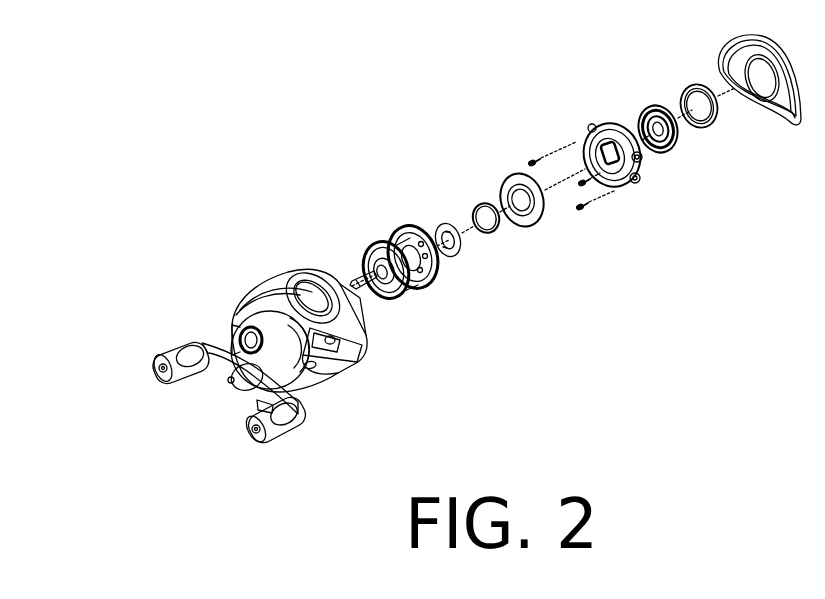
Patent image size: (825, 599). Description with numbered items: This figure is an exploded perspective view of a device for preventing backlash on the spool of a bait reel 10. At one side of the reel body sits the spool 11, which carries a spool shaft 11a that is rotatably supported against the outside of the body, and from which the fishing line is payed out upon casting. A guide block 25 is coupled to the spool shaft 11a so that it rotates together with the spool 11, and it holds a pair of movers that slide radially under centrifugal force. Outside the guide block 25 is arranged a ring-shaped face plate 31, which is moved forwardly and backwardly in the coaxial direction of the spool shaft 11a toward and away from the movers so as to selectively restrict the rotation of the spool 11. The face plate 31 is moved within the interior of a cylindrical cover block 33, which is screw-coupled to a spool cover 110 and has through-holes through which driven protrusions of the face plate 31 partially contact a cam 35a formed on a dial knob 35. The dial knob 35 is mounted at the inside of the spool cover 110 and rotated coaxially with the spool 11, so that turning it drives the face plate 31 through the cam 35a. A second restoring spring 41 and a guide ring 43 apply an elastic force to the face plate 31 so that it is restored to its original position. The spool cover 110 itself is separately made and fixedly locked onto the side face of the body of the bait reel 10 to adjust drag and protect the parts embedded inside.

The bait reel 10 is at (358, 373).
The spool 11 is at (390, 240).
The spool shaft 11a is at (352, 280).
The guide block 25 is at (427, 240).
The guide ring 43 is at (455, 258).
The second restoring spring 41 is at (485, 233).
The ring-shaped face plate 31 is at (535, 228).
The cover block 33 is at (618, 190).
The dial knob 35 is at (668, 152).
The cam 35a is at (640, 126).
The spool cover 110 is at (762, 120).